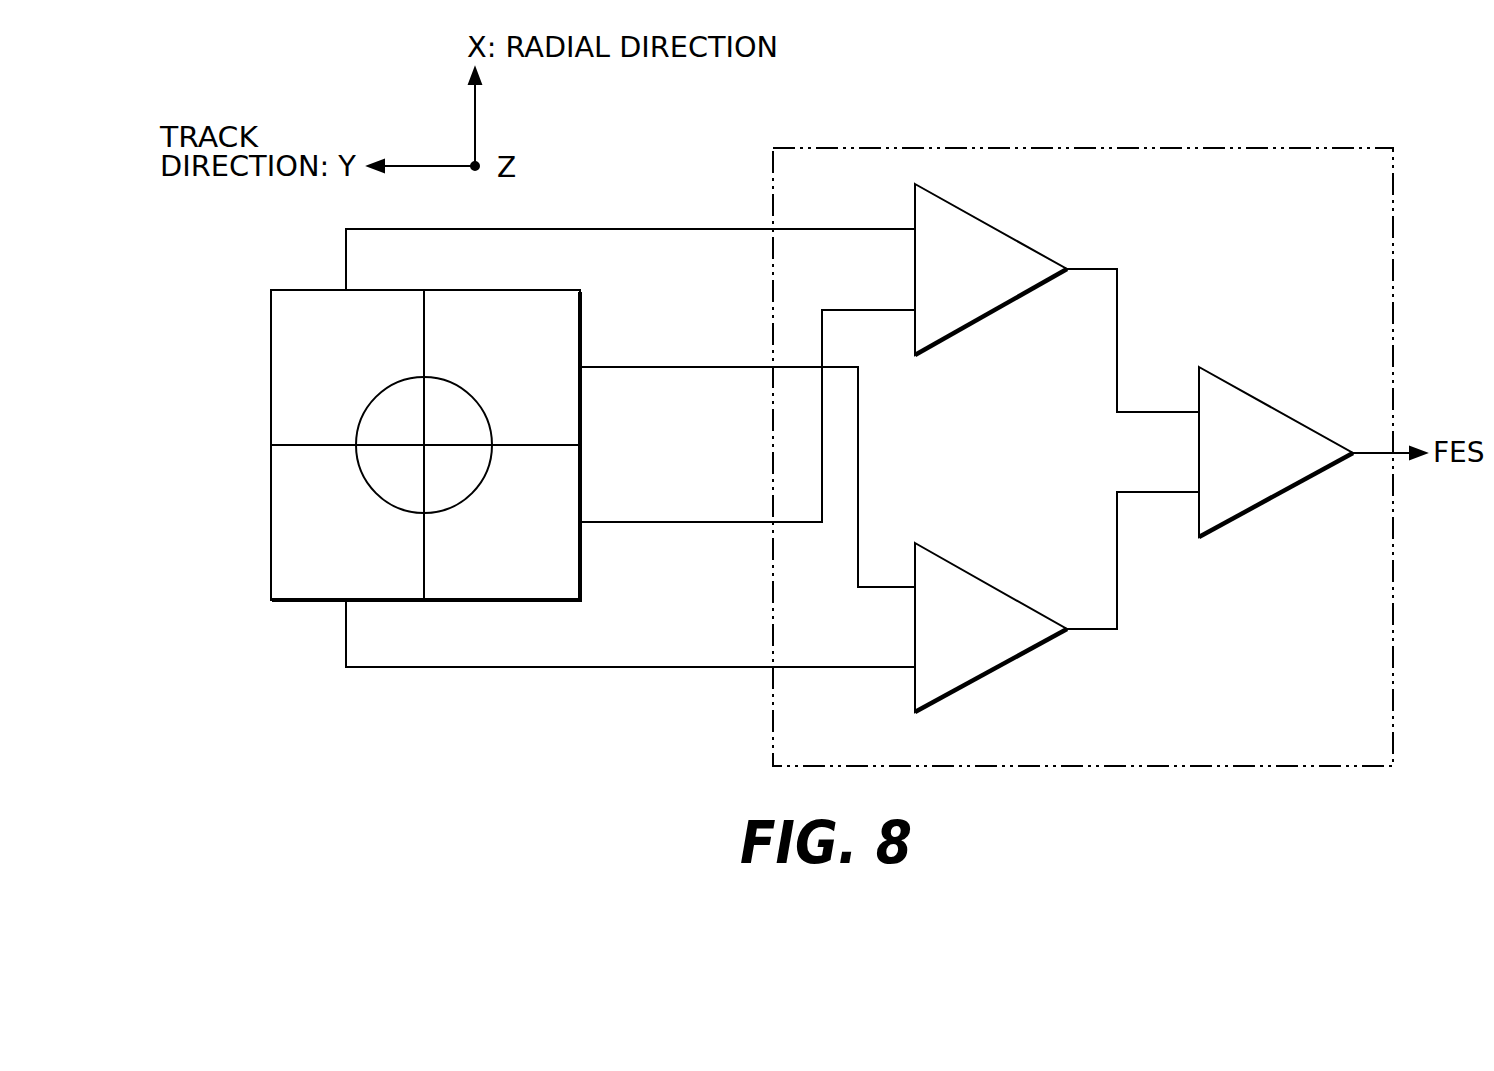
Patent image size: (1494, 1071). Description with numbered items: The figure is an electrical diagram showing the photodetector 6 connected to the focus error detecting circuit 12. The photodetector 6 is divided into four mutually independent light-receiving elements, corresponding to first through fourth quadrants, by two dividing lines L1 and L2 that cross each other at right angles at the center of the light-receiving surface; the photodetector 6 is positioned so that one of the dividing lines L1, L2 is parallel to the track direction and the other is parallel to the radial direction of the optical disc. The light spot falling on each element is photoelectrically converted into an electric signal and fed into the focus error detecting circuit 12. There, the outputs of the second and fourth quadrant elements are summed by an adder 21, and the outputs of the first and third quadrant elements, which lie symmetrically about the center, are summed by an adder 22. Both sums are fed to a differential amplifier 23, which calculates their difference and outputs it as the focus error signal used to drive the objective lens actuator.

The photodetector 6 is at (272, 598).
The focus error detecting circuit 12 is at (1393, 197).
The adder 21 is at (987, 224).
The adder 22 is at (988, 583).
The differential amplifier 23 is at (1273, 405).
The dividing line L1 is at (424, 585).
The dividing line L2 is at (296, 445).